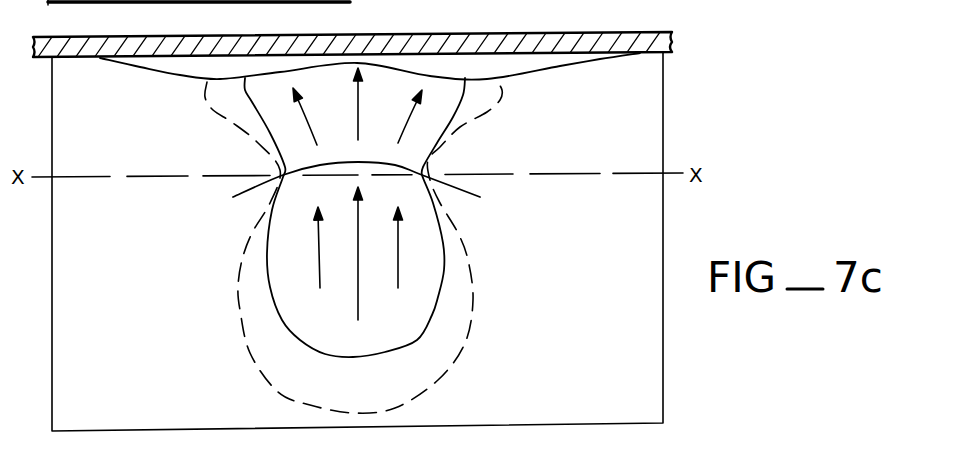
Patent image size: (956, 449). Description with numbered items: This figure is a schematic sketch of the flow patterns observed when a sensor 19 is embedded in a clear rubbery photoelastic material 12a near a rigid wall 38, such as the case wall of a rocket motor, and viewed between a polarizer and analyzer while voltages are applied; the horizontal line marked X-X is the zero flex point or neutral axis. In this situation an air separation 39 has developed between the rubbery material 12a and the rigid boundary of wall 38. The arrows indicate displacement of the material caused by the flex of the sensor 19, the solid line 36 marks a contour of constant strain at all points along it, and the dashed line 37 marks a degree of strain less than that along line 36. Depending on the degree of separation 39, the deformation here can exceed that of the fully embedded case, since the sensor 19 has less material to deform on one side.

The clear rubbery photoelastic material 12a is at (663, 100).
The rigid wall 38 is at (653, 37).
The air separation 39 is at (553, 62).
The sensor 19 is at (233, 198).
The solid line 36 is at (442, 294).
The dashed line 37 is at (462, 350).